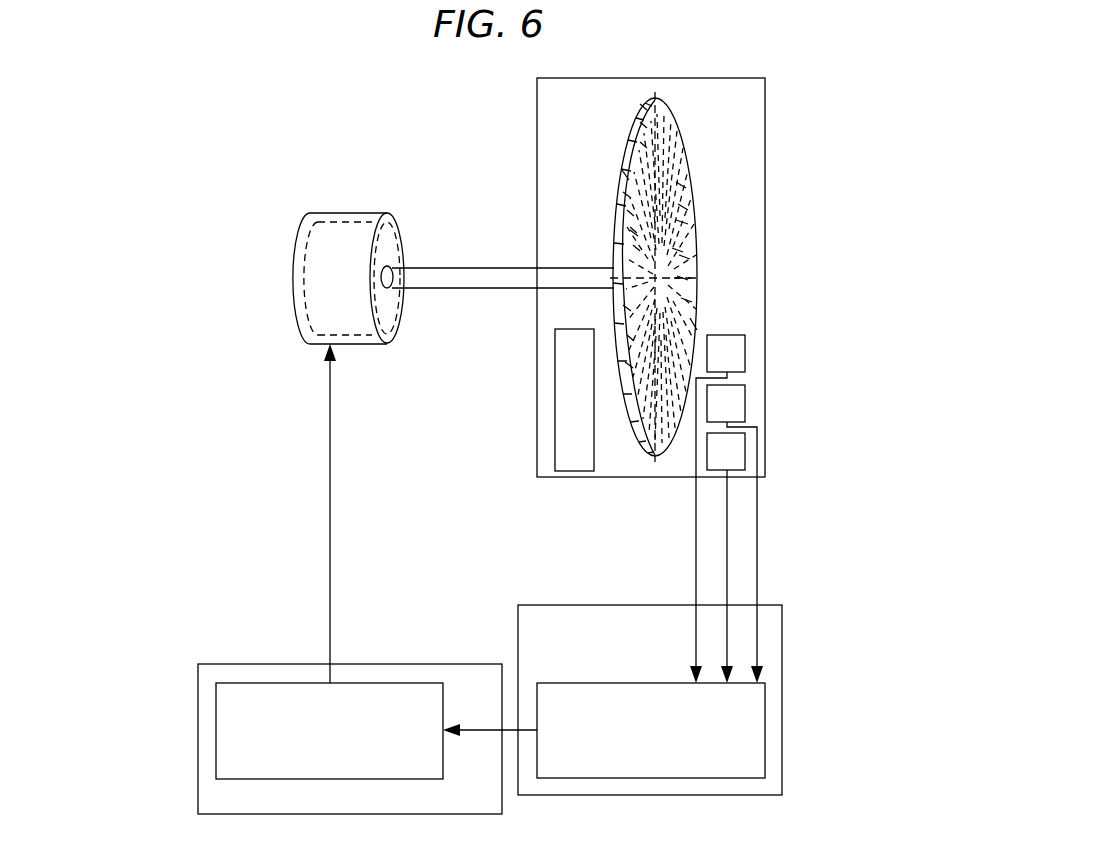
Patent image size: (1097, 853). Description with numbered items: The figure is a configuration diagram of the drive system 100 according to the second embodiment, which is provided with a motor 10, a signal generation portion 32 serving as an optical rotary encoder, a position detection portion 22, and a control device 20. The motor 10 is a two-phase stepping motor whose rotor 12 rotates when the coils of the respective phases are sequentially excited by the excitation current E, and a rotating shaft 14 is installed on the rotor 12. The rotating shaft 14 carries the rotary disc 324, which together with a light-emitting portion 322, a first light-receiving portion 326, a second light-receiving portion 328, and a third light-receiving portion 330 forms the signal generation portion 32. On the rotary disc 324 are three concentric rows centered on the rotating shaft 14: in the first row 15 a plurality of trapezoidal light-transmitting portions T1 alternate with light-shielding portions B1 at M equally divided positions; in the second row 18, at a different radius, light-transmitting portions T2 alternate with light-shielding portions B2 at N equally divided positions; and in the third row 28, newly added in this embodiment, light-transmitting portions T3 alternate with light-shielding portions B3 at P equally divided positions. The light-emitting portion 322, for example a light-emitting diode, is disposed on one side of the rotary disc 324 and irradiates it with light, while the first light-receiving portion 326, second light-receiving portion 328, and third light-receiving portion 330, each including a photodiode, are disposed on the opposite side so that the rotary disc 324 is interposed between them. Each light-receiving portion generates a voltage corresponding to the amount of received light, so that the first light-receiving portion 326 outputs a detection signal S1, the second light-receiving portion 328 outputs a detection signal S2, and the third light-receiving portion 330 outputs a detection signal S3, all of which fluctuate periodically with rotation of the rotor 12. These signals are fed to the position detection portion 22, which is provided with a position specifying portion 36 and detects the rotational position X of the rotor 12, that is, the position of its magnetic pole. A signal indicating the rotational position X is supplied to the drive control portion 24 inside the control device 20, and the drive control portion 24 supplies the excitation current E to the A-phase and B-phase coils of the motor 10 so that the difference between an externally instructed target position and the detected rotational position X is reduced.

The drive system 100 is at (246, 148).
The motor 10 is at (293, 278).
The rotor 12 is at (343, 213).
The rotating shaft 14 is at (418, 267).
The second row 18 is at (692, 172).
The third row 28 is at (625, 175).
The signal generation portion 32 is at (682, 222).
The first row 15 is at (677, 250).
The light-shielding portion B1 is at (630, 230).
The light-shielding portion B2 is at (682, 207).
The light-shielding portion B3 is at (640, 145).
The light-transmitting portion T1 is at (600, 267).
The light-transmitting portion T2 is at (687, 300).
The light-transmitting portion T3 is at (625, 365).
The rotary disc 324 is at (697, 323).
The light-emitting portion 322 is at (555, 418).
The first light-receiving portion 326 is at (745, 362).
The second light-receiving portion 328 is at (745, 405).
The third light-receiving portion 330 is at (745, 453).
The detection signal S1 is at (692, 527).
The detection signal S2 is at (757, 542).
The detection signal S3 is at (726, 578).
The control device 20 is at (257, 664).
The position detection portion 22 is at (783, 630).
The drive control portion 24 is at (216, 718).
The position specifying portion 36 is at (765, 723).
The excitation current E is at (341, 513).
The rotational position X is at (490, 714).